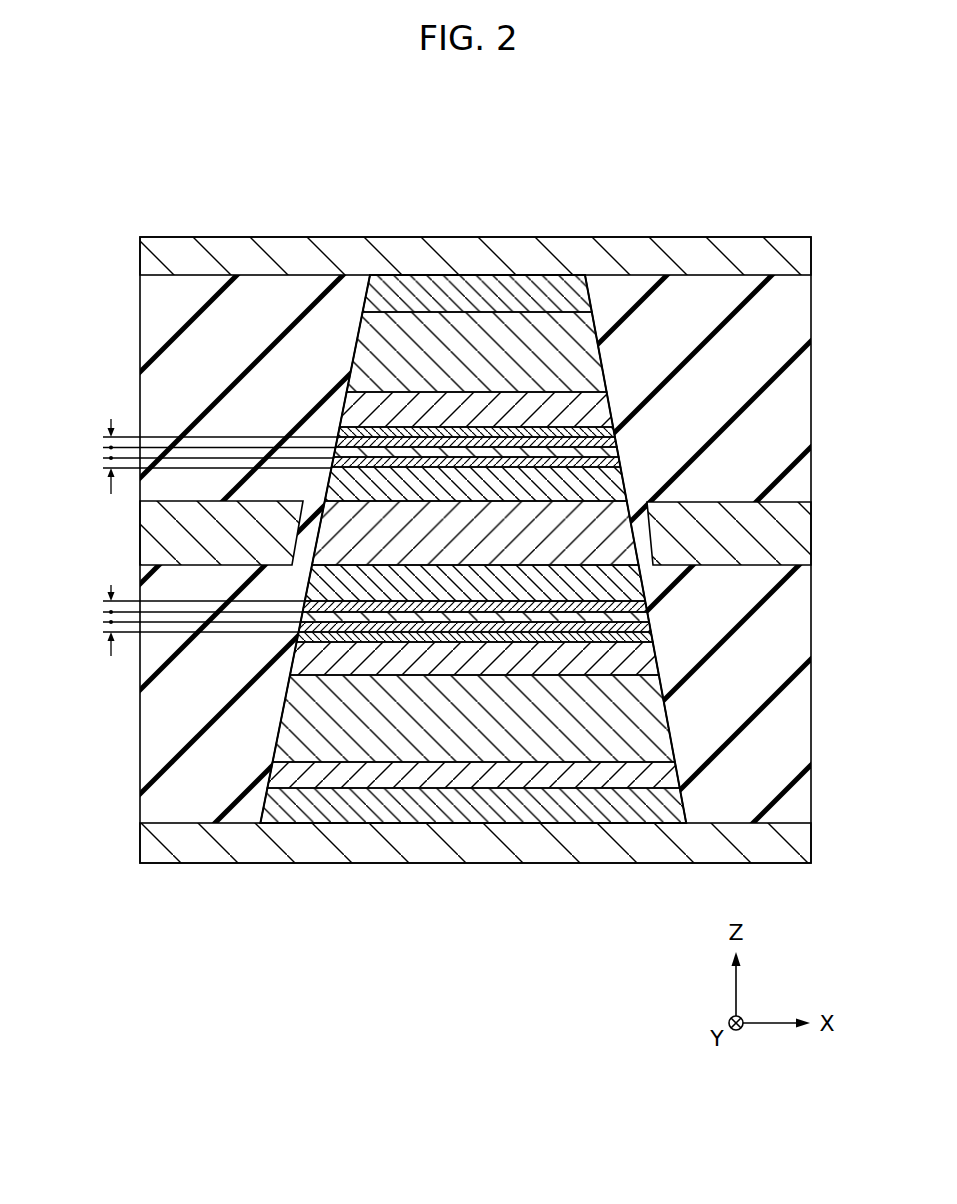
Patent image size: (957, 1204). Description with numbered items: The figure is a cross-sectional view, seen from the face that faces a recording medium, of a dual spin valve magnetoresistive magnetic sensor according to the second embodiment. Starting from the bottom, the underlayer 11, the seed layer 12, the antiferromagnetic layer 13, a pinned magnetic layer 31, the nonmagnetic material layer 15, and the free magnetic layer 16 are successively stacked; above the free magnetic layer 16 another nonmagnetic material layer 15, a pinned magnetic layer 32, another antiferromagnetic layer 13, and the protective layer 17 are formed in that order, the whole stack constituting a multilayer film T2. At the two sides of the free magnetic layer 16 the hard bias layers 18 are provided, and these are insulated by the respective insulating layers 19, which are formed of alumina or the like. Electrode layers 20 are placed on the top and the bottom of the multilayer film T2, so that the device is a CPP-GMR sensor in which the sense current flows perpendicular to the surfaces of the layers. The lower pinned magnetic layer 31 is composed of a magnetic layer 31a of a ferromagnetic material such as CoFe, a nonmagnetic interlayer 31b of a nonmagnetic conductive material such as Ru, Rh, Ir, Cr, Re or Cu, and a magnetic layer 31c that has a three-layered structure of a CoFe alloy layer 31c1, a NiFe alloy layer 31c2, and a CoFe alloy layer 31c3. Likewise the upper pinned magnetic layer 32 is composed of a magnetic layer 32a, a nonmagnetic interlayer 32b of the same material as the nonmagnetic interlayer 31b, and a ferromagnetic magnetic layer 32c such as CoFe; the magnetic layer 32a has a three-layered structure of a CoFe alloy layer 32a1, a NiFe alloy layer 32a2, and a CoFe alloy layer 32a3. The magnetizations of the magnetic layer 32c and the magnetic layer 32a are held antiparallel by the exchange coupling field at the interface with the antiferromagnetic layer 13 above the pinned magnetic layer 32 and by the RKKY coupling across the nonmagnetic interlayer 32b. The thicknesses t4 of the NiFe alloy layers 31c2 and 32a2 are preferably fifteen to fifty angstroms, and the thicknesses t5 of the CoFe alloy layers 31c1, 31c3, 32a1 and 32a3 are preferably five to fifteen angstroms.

The underlayer 11 is at (625, 808).
The seed layer 12 is at (600, 780).
The antiferromagnetic layer 13 is at (384, 340).
The nonmagnetic material layer 15 is at (408, 303).
The free magnetic layer 16 is at (503, 533).
The protective layer 17 is at (421, 425).
The hard bias layer 18 is at (145, 517).
The insulating layer 19 is at (145, 335).
The electrode layer 20 is at (801, 255).
The pinned magnetic layer 31 is at (442, 780).
The magnetic layer 31a is at (307, 650).
The nonmagnetic interlayer 31b is at (335, 627).
The magnetic layer 31c is at (475, 760).
The CoFe alloy layer 31c1 is at (370, 617).
The NiaFeb alloy layer 31c2 is at (420, 607).
The CoFe alloy layer 31c3 is at (455, 585).
The pinned magnetic layer 32 is at (506, 286).
The magnetic layer 32a is at (476, 306).
The CoFe alloy layer 32a1 is at (440, 452).
The NiaFeb alloy layer 32a2 is at (477, 462).
The CoFe alloy layer 32a3 is at (517, 485).
The nonmagnetic interlayer 32b is at (543, 442).
The magnetic layer 32c is at (578, 432).
The multilayer film T2 is at (391, 266).
The thickness t4 is at (105, 453).
The thickness t5 is at (105, 437).